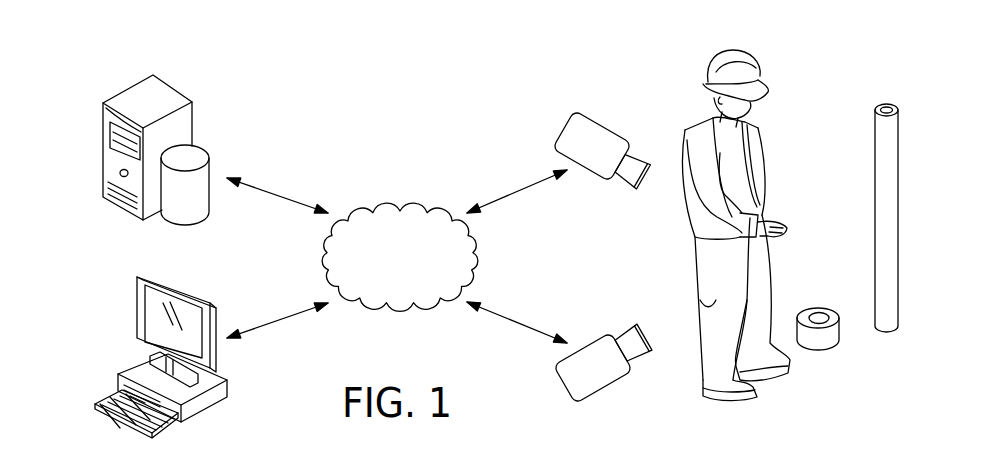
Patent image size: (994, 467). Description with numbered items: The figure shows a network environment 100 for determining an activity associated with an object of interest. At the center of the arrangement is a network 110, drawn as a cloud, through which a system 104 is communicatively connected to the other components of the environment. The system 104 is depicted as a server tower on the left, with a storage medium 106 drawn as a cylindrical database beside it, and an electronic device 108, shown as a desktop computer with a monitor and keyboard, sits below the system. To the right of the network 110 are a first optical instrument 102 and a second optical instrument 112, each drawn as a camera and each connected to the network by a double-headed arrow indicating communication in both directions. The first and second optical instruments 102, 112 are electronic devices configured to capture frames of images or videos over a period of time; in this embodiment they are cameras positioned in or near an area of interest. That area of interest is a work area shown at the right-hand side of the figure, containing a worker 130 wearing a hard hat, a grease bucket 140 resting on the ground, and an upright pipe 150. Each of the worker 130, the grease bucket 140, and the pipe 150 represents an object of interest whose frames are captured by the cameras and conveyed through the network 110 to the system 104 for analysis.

The network environment 100 is at (326, 72).
The first optical instrument 102 is at (607, 392).
The system 104 is at (103, 150).
The storage medium 106 is at (208, 157).
The electronic device 108 is at (135, 310).
The network 110 is at (420, 272).
The second optical instrument 112 is at (607, 125).
The worker 130 is at (733, 43).
The grease bucket 140 is at (817, 350).
The pipe 150 is at (885, 335).